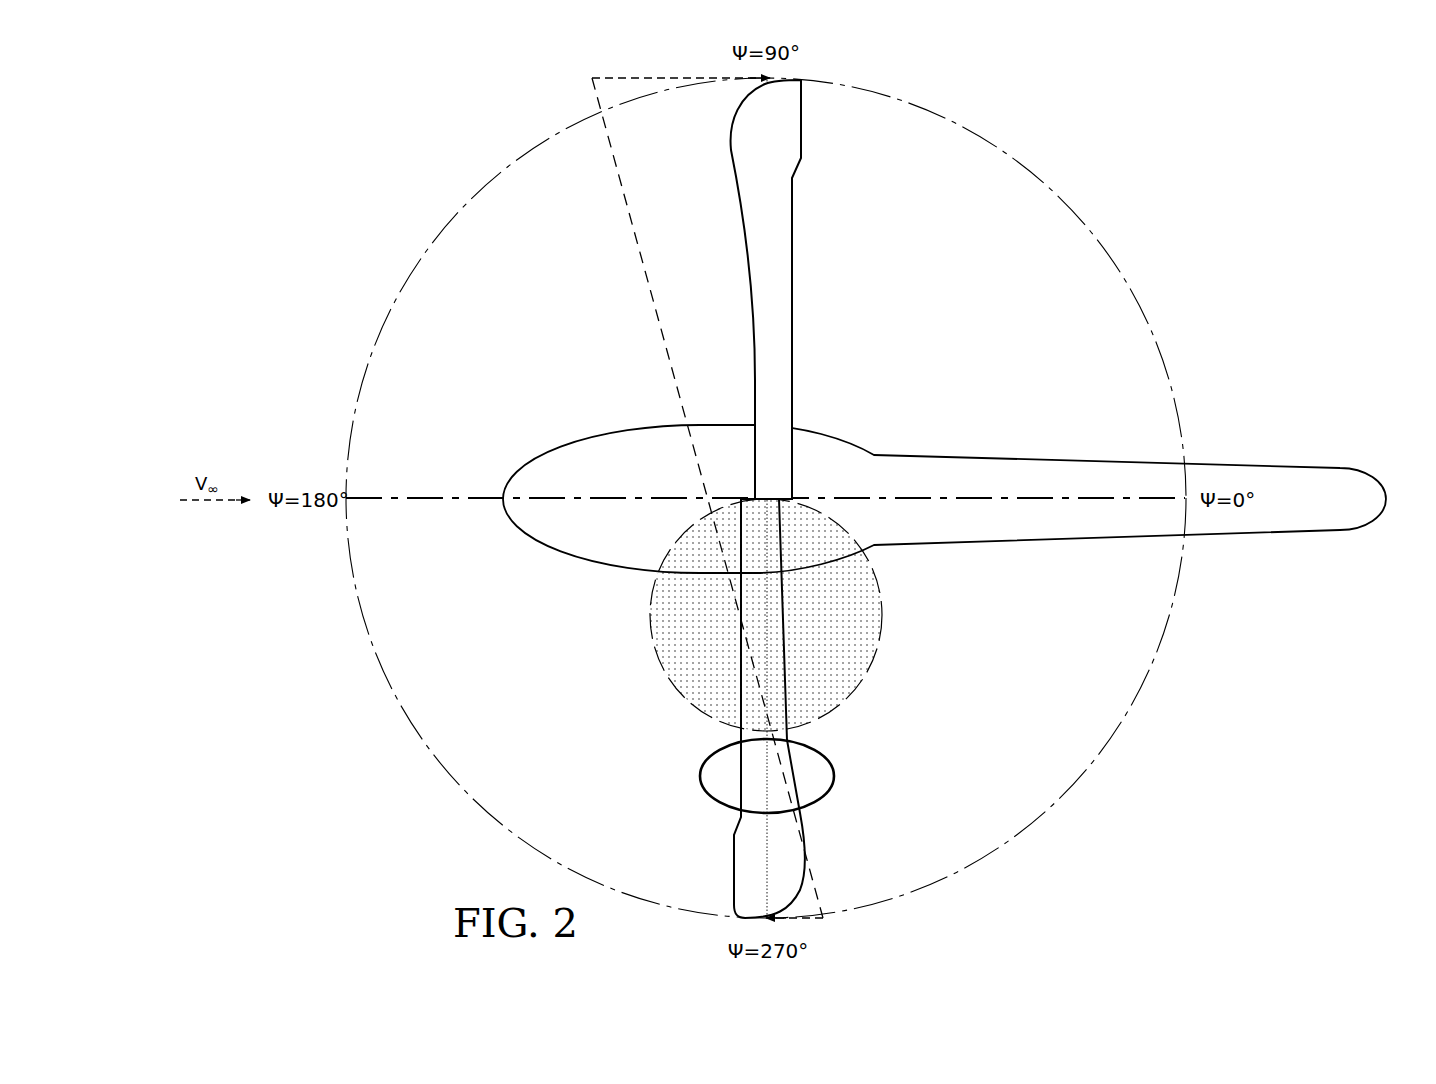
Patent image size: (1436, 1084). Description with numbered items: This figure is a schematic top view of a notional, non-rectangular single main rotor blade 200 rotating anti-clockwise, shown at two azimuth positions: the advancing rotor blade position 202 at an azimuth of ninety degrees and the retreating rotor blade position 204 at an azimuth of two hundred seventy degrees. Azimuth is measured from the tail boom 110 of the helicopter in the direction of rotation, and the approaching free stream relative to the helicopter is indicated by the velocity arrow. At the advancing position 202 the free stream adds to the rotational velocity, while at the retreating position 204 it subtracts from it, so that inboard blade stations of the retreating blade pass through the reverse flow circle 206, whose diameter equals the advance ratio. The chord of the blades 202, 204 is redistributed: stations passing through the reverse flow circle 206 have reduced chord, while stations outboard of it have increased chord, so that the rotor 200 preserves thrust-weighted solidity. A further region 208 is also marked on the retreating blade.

The main rotor blade 200 is at (1003, 97).
The tail boom 110 is at (1020, 458).
The advancing rotor blade position 202 is at (793, 318).
The retreating rotor blade position 204 is at (731, 855).
The reverse flow circle 206 is at (882, 645).
The reverse flow region 208 is at (825, 800).